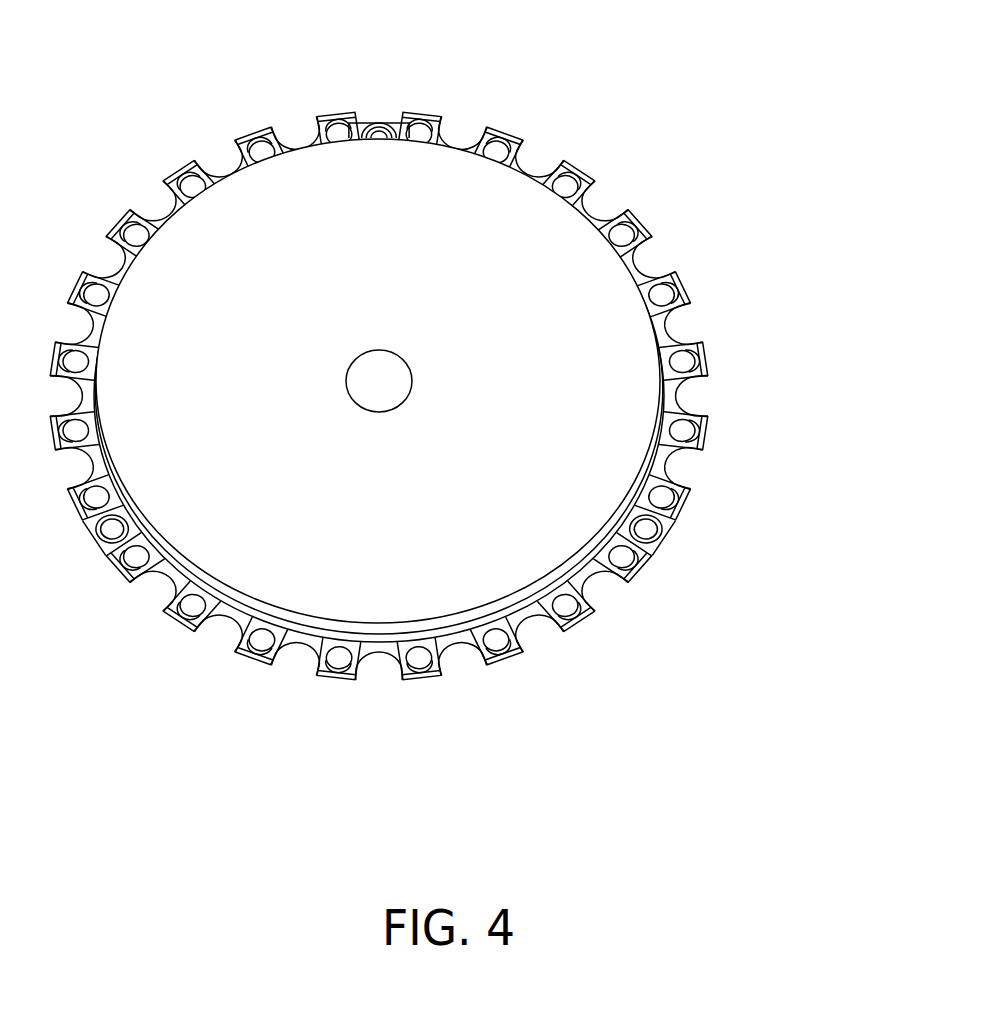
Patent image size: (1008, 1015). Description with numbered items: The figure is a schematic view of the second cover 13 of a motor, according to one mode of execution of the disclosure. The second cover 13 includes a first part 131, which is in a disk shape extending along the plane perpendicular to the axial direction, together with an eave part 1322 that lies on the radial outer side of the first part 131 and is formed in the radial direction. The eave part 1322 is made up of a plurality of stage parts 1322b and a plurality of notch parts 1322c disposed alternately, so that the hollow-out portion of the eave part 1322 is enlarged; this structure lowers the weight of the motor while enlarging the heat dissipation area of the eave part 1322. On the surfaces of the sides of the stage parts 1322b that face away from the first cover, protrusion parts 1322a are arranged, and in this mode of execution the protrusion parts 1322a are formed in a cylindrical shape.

The second cover 13 is at (87, 104).
The first part 131 is at (534, 257).
The eave part 1322 is at (669, 555).
The protrusion parts 1322a is at (523, 643).
The stage parts 1322b is at (508, 674).
The notch parts 1322c is at (359, 689).